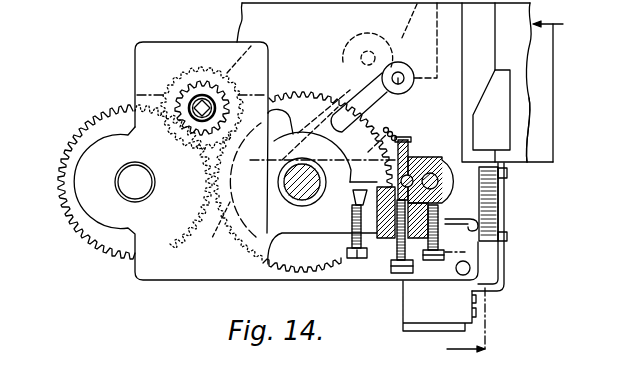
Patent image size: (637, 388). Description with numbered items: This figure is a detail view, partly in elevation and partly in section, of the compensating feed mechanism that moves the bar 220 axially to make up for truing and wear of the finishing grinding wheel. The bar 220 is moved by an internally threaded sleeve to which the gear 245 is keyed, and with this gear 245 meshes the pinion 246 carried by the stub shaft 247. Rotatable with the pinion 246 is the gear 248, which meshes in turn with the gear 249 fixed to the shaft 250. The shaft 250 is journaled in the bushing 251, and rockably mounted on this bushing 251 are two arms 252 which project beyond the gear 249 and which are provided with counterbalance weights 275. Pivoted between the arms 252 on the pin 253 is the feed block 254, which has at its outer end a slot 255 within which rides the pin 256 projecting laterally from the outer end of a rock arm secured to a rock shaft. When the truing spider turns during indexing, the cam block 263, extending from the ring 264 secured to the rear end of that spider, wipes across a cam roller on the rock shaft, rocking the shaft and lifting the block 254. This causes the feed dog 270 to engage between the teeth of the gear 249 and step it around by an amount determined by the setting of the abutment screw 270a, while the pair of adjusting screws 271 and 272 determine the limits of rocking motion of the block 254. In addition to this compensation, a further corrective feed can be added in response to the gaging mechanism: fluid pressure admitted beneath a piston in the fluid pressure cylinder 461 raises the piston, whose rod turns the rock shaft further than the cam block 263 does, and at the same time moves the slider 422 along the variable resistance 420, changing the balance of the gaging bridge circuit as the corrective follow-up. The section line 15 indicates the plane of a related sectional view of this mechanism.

The section line 15 is at (505, 187).
The bar 220 is at (137, 172).
The gear 245 is at (62, 149).
The pinion 246 is at (178, 90).
The stub shaft 247 is at (202, 100).
The gear 248 is at (395, 82).
The gear 249 is at (298, 99).
The shaft 250 is at (325, 207).
The bushing 251 is at (313, 204).
The arms 252 is at (400, 274).
The pin 253 is at (410, 137).
The feed block 254 is at (448, 196).
The slot 255 is at (446, 180).
The pin 256 is at (420, 157).
The cam block 263 is at (492, 87).
The ring 264 is at (518, 53).
The feed dog 270 is at (398, 94).
The abutment screw 270a is at (347, 258).
The adjusting screw 271 is at (396, 243).
The adjusting screw 272 is at (428, 261).
The counterbalance weights 275 is at (202, 167).
The variable resistance 420 is at (499, 220).
The slider 422 is at (447, 228).
The fluid pressure cylinder 461 is at (407, 320).